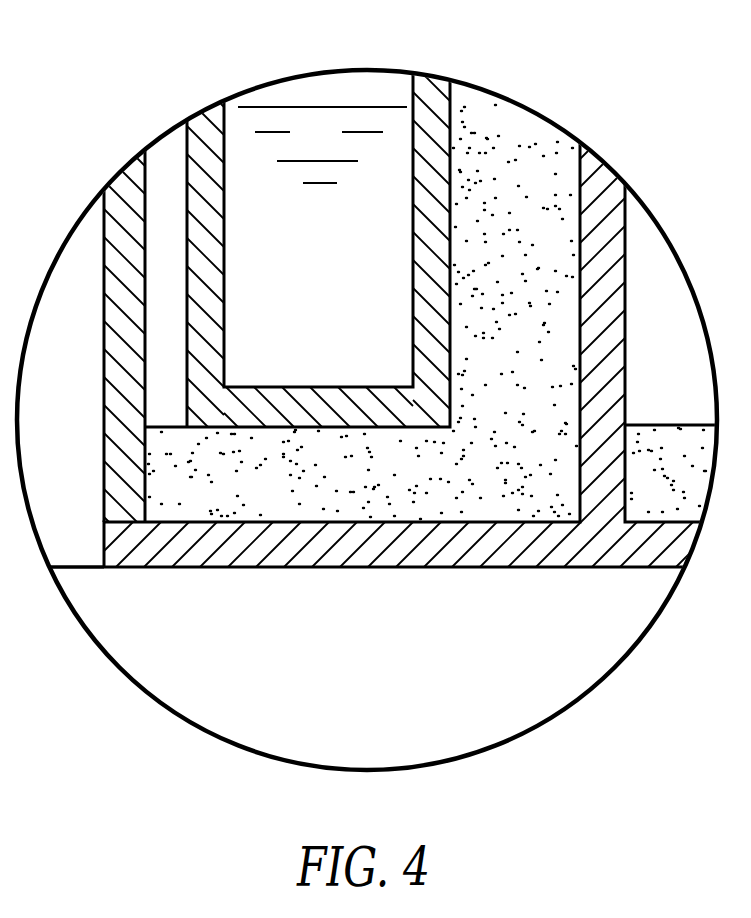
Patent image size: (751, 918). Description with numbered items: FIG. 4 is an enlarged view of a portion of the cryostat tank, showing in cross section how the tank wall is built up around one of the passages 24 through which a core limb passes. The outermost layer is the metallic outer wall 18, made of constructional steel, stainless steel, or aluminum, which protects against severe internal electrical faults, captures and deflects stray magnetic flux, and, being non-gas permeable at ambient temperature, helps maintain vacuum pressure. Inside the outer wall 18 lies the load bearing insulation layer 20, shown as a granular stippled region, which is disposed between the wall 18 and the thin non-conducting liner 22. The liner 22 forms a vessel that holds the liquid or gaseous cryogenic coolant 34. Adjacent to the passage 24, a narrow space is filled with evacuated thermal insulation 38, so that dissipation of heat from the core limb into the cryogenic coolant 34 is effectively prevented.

The outer wall 18 is at (605, 540).
The load bearing insulation layer 20 is at (498, 135).
The non-conducting liner 22 is at (428, 102).
The passage 24 is at (73, 512).
The cryogenic coolant 34 is at (335, 143).
The evacuated thermal insulation 38 is at (170, 163).